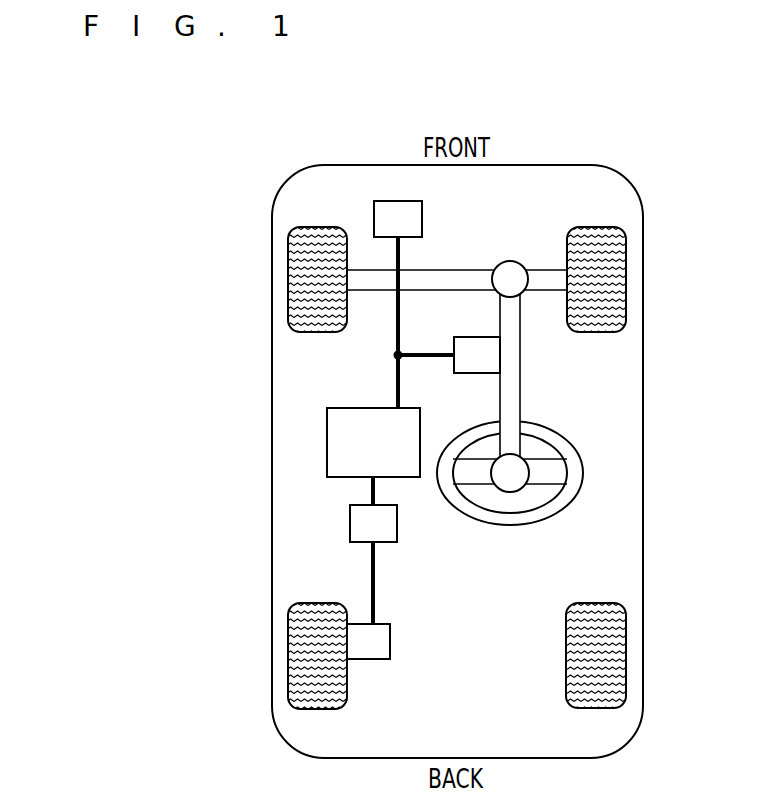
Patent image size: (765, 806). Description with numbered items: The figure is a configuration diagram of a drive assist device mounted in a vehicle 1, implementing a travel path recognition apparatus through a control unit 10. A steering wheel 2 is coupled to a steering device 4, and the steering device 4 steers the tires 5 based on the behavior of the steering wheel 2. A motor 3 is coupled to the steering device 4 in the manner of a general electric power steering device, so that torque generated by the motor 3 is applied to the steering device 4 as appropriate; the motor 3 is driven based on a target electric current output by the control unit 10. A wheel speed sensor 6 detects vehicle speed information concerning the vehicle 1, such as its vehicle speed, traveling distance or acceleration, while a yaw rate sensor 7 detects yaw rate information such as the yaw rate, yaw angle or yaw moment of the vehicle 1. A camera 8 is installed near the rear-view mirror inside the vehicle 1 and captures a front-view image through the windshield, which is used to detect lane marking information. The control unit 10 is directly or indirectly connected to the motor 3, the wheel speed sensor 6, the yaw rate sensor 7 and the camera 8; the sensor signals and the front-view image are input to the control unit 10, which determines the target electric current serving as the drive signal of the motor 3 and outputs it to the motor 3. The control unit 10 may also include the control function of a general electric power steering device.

The vehicle 1 is at (302, 502).
The steering wheel 2 is at (552, 428).
The motor 3 is at (473, 335).
The steering device 4 is at (433, 270).
The tires 5 is at (302, 282).
The wheel speed sensor 6 is at (380, 645).
The yaw rate sensor 7 is at (387, 527).
The camera 8 is at (427, 215).
The control unit 10 is at (368, 407).